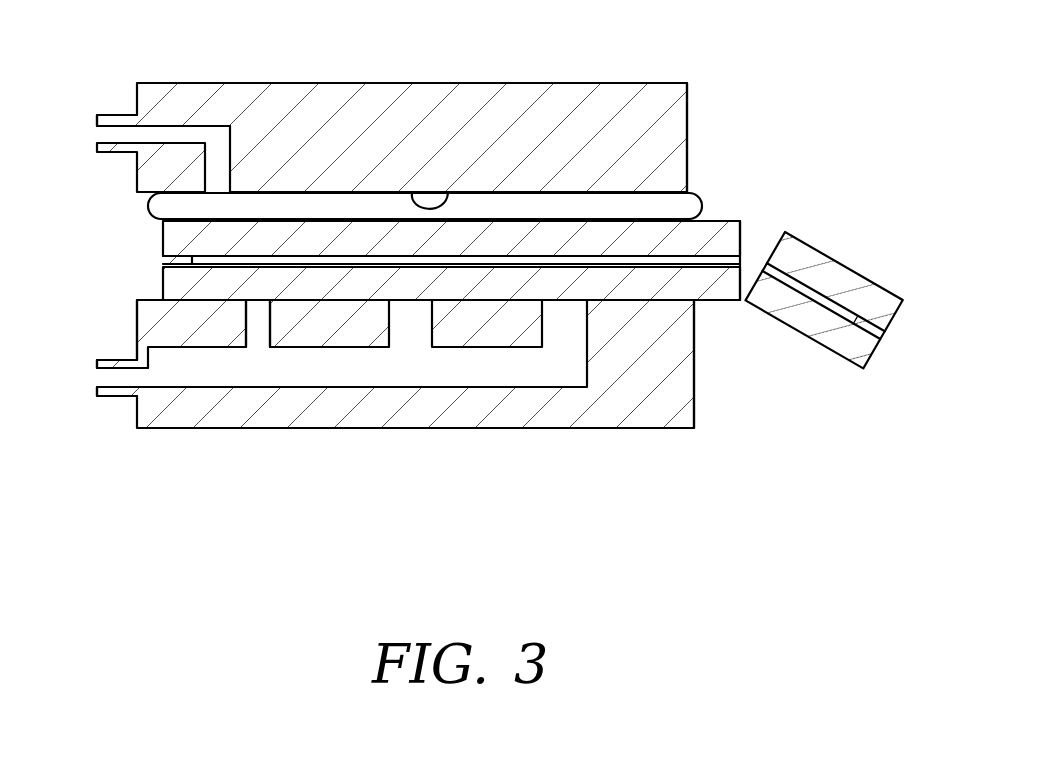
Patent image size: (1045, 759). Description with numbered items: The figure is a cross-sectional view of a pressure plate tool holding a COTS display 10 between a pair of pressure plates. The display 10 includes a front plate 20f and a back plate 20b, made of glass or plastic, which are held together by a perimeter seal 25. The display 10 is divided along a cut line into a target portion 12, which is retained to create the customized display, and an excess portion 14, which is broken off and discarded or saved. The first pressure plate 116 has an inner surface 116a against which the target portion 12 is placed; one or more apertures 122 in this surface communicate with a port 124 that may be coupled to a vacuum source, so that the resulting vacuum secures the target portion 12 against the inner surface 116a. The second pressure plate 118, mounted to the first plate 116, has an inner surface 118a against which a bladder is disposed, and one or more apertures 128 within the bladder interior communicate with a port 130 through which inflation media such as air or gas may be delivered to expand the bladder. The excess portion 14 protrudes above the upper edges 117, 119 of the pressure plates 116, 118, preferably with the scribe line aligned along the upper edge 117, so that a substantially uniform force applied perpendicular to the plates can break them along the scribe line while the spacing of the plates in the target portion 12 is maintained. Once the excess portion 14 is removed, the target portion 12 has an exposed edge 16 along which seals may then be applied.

The COTS display 10 is at (733, 188).
The target portion 12 is at (132, 239).
The excess portion 14 is at (864, 254).
The exposed edge 16 is at (742, 230).
The front plate 20f is at (557, 238).
The back plate 20b is at (640, 283).
The perimeter seal 25 is at (164, 261).
The first pressure plate 116 is at (416, 430).
The inner surface of first plate 116a is at (157, 300).
The upper edge of first pressure plate 117 is at (695, 388).
The second pressure plate 118 is at (336, 82).
The inner surface of second plate 118a is at (447, 192).
The upper edge of second pressure plate 119 is at (688, 102).
The apertures 122 is at (247, 323).
The port 124 is at (117, 397).
The apertures 128 is at (207, 164).
The port 130 is at (118, 114).